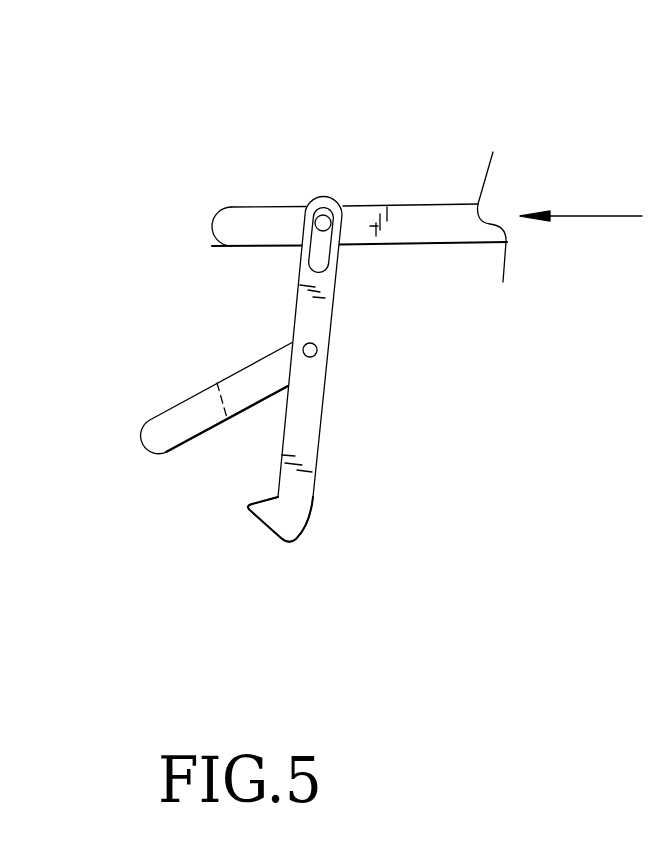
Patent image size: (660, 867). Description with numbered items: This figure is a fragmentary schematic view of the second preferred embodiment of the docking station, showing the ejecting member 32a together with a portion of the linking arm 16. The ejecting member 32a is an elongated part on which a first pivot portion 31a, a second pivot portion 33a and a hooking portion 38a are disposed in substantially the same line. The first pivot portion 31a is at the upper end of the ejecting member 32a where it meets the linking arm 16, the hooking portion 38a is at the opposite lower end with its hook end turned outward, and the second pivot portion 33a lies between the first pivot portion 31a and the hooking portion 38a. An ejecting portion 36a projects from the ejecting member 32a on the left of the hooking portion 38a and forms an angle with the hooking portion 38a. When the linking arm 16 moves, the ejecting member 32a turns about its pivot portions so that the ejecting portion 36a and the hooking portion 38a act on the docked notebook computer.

The linking arm 16 is at (428, 232).
The first pivot portion 31a is at (323, 216).
The ejecting member 32a is at (305, 432).
The second pivot portion 33a is at (318, 350).
The ejecting portion 36a is at (155, 440).
The hooking portion 38a is at (297, 505).